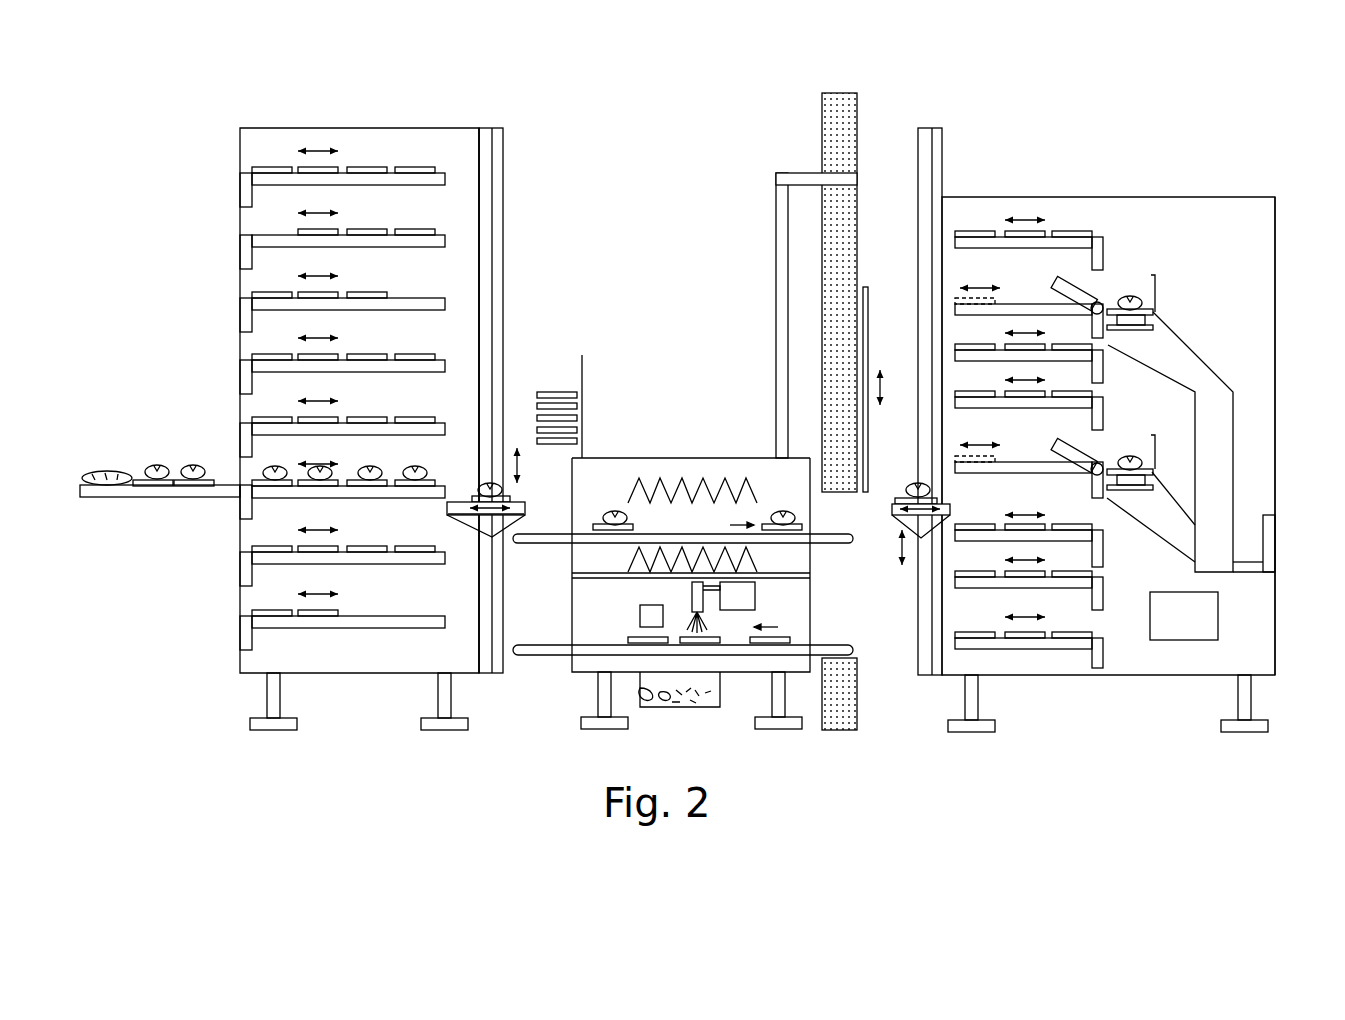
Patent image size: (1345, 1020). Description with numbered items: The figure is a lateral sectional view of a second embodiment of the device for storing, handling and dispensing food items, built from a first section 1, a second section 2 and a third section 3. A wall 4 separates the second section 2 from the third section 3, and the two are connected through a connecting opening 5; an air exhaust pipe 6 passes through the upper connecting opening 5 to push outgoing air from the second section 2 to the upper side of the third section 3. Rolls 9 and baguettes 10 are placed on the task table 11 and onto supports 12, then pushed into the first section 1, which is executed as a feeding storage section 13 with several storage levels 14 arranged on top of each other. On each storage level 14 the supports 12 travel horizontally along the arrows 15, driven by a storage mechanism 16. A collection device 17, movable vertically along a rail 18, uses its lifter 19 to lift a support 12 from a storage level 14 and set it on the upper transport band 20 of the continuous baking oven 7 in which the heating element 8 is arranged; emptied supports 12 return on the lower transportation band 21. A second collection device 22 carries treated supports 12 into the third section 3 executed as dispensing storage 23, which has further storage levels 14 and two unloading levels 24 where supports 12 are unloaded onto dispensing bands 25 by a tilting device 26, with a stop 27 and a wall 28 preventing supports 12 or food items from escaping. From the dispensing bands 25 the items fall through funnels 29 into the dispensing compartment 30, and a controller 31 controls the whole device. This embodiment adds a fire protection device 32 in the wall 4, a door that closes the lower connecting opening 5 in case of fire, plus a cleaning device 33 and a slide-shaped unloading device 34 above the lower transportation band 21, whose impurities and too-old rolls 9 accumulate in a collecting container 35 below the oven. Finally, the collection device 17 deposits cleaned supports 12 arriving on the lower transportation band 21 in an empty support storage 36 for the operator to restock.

The first section 1 is at (366, 128).
The second section 2 is at (675, 470).
The third section 3 is at (1088, 190).
The wall 4 is at (838, 103).
The connecting opening 5 is at (840, 178).
The air exhaust pipe 6 is at (808, 188).
The continuous baking oven 7 is at (620, 458).
The heating element 8 is at (722, 488).
The rolls 9 is at (153, 467).
The baguettes 10 is at (107, 470).
The task table 11 is at (160, 495).
The supports 12 is at (415, 424).
The feeding storage section 13 is at (447, 150).
The storage levels 14 is at (375, 490).
The arrows 15 is at (305, 341).
The storage mechanism 16 is at (245, 188).
The collection device 17 is at (470, 531).
The rail 18 is at (496, 286).
The lifter 19 is at (452, 505).
The upper transport band 20 is at (540, 535).
The lower transportation band 21 is at (850, 652).
The second collection device 22 is at (895, 522).
The dispensing storage 23 is at (1188, 220).
The unloading levels 24 is at (1008, 302).
The dispensing bands 25 is at (1145, 310).
The tilting device 26 is at (1053, 286).
The stop 27 is at (1098, 458).
The wall 28 is at (1157, 280).
The funnels 29 is at (1175, 347).
The dispensing compartment 30 is at (1245, 538).
The controller 31 is at (1185, 628).
The fire protection device 32 is at (865, 290).
The cleaning device 33 is at (740, 606).
The unloading device 34 is at (650, 612).
The collecting container 35 is at (718, 698).
The empty support storage 36 is at (578, 376).